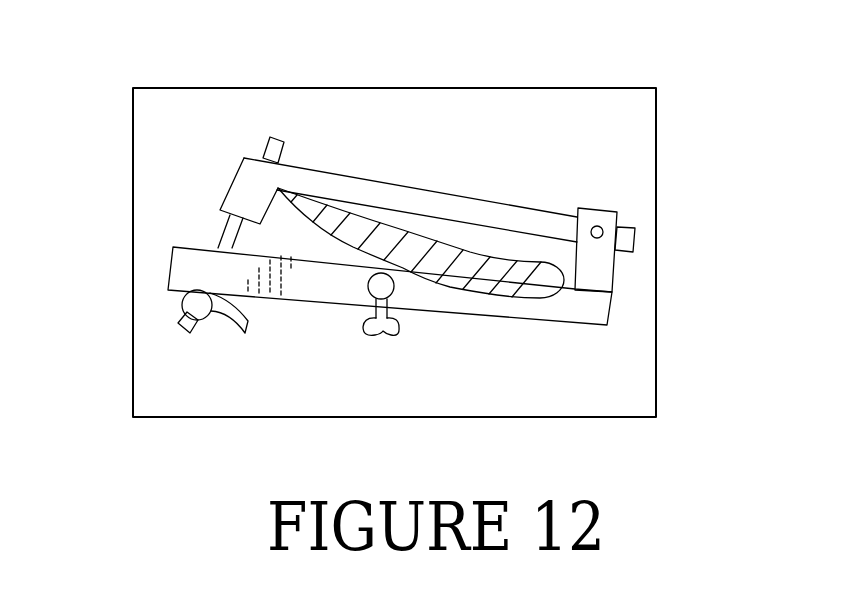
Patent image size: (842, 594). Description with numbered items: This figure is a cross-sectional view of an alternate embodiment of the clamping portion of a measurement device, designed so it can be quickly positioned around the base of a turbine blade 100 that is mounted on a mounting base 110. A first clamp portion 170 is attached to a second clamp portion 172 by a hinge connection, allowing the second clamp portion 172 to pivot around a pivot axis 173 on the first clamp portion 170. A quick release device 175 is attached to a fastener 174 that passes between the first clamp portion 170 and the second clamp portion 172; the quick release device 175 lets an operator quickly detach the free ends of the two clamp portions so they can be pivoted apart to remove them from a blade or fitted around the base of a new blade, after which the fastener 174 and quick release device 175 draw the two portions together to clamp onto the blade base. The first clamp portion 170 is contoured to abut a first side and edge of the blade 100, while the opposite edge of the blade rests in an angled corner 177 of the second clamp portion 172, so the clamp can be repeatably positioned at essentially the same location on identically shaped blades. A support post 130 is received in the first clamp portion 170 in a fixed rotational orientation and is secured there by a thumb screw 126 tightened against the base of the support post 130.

The turbine blade 100 is at (560, 283).
The mounting base 110 is at (150, 367).
The thumb screw 126 is at (374, 334).
The support post 130 is at (394, 291).
The first clamp portion 170 is at (303, 283).
The second clamp portion 172 is at (428, 196).
The pivot axis 173 is at (598, 226).
The fastener 174 is at (282, 145).
The quick release device 175 is at (228, 316).
The angled corner 177 is at (277, 189).